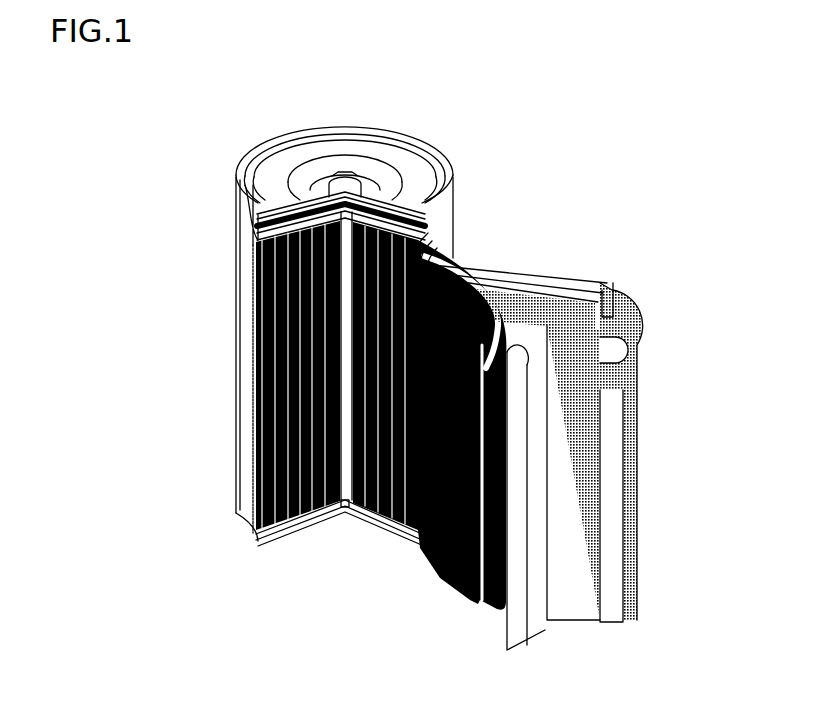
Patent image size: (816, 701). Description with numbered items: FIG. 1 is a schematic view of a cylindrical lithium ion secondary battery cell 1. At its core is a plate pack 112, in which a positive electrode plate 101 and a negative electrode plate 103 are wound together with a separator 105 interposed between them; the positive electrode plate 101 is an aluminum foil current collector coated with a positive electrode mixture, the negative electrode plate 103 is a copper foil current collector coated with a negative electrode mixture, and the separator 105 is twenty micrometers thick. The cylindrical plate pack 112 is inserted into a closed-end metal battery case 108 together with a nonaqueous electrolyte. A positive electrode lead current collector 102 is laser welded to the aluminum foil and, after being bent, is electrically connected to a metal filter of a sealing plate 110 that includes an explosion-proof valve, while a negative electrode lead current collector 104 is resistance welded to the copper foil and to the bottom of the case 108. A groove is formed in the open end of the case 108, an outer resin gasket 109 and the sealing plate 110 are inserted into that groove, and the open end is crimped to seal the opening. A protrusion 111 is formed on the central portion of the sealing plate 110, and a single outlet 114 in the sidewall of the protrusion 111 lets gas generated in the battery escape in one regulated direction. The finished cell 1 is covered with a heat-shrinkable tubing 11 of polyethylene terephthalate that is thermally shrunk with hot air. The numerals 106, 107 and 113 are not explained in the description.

The cell 1 is at (437, 120).
The heat-shrinkable tubing 11 is at (245, 170).
The positive electrode plate 101 is at (507, 465).
The positive electrode lead current collector 102 is at (452, 218).
The negative electrode plate 103 is at (632, 378).
The negative electrode lead current collector 104 is at (612, 507).
The separator 105 is at (612, 298).
The upper insulating plate 106 is at (247, 247).
The lower insulating plate 107 is at (297, 537).
The battery case 108 is at (242, 422).
The outer resin gasket 109 is at (383, 175).
The sealing plate 110 is at (243, 195).
The protrusion 111 is at (362, 153).
The plate pack 112 is at (685, 206).
The safety vent plate 113 is at (312, 180).
The outlet 114 is at (345, 150).